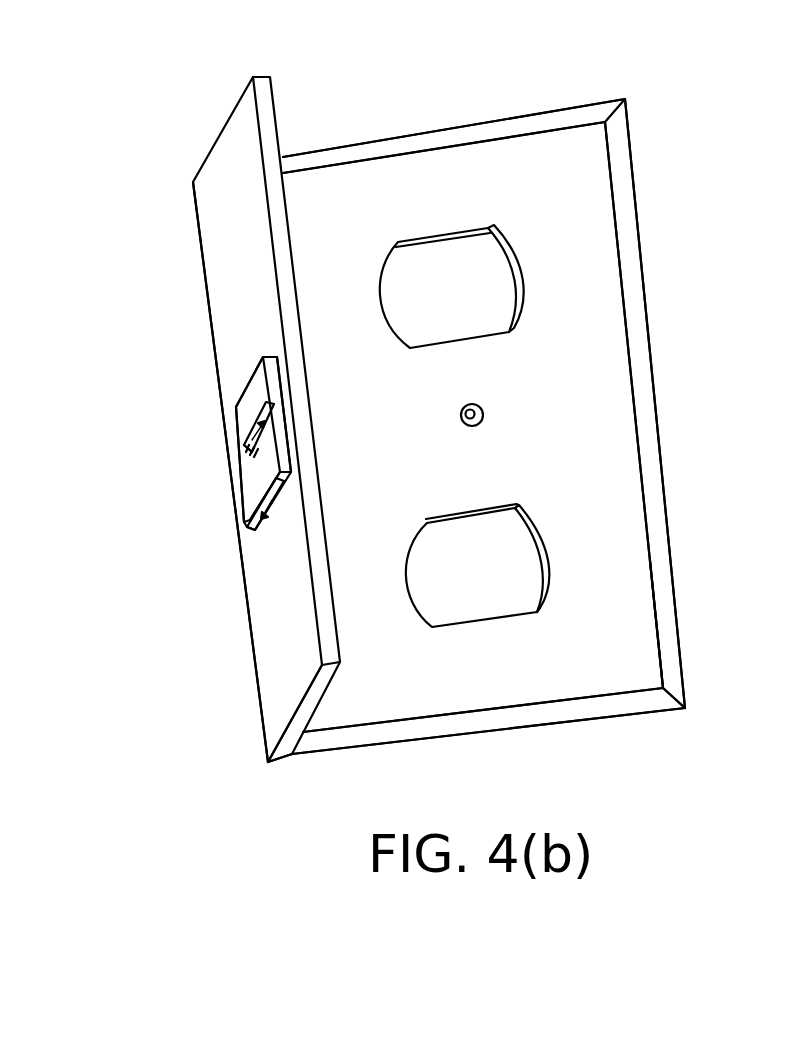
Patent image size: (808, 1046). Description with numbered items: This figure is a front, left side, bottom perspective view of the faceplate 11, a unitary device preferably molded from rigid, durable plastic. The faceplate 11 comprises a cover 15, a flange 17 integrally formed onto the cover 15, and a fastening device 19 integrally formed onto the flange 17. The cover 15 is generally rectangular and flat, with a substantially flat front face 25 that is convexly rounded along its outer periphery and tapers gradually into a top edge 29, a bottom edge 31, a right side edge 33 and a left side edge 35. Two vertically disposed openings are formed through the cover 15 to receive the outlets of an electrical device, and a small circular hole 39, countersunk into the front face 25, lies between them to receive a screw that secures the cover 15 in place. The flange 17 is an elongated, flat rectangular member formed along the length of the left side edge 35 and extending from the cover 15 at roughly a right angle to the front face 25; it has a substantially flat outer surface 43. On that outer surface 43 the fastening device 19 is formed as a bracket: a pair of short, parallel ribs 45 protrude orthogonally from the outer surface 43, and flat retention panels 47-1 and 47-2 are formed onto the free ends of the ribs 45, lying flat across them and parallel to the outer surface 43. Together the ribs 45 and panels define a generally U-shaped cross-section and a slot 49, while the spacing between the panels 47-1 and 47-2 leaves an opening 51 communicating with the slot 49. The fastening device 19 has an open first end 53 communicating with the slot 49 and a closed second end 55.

The faceplate 11 is at (756, 710).
The cover 15 is at (590, 185).
The flange 17 is at (223, 145).
The fastening device 19 is at (230, 508).
The front face 25 is at (658, 637).
The top edge 29 is at (418, 130).
The bottom edge 31 is at (513, 730).
The right side edge 33 is at (657, 378).
The left side edge 35 is at (298, 753).
The circular hole 39 is at (483, 408).
The outer surface 43 is at (218, 198).
The ribs 45 is at (250, 456).
The flat retention panel 47-1 is at (255, 395).
The flat retention panel 47-2 is at (247, 480).
The slot 49 is at (262, 525).
The opening 51 is at (227, 472).
The first end 53 is at (288, 480).
The second end 55 is at (262, 356).